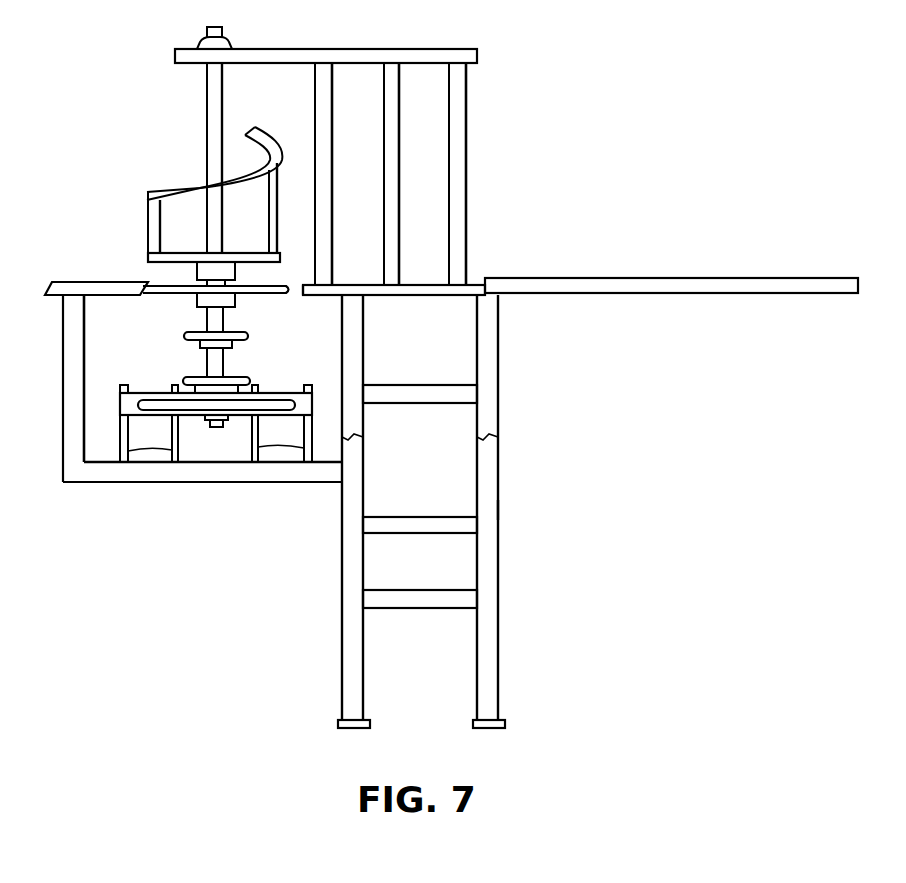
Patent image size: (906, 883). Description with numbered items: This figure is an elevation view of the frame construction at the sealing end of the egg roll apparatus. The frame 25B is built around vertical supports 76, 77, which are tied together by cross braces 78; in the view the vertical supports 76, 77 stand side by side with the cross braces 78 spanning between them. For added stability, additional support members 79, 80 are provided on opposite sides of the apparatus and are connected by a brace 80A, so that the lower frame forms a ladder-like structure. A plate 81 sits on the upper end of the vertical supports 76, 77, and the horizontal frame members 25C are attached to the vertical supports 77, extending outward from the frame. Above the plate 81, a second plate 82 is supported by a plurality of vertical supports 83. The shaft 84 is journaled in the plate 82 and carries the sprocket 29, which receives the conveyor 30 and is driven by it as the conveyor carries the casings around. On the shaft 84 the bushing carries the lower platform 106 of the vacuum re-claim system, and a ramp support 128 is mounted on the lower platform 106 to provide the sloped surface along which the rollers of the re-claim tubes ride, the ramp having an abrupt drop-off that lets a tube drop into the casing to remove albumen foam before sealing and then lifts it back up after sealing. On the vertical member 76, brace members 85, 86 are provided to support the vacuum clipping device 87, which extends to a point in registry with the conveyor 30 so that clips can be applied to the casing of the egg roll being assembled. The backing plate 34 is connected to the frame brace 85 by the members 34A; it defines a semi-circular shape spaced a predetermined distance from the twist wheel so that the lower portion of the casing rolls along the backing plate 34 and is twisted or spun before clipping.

The plate 82 is at (278, 56).
The shaft 84 is at (207, 118).
The ramp support 128 is at (267, 138).
The lower platform 106 is at (148, 258).
The vertical supports 83 is at (328, 163).
The vacuum clipping device 87 is at (70, 282).
The sprocket 29 is at (267, 295).
The conveyor 30 is at (298, 294).
The plate 81 is at (433, 290).
The horizontal frame members 25C is at (738, 278).
The brace member 86 is at (70, 370).
The brace member 85 is at (148, 472).
The backing plate 34 is at (156, 398).
The members 34A is at (243, 441).
The vertical support 76 is at (363, 335).
The vertical support 77 is at (498, 338).
The additional support member 79 is at (352, 672).
The additional support member 80 is at (492, 676).
The cross braces 78 is at (421, 395).
The brace 80A is at (420, 530).
The frame 25B is at (508, 510).